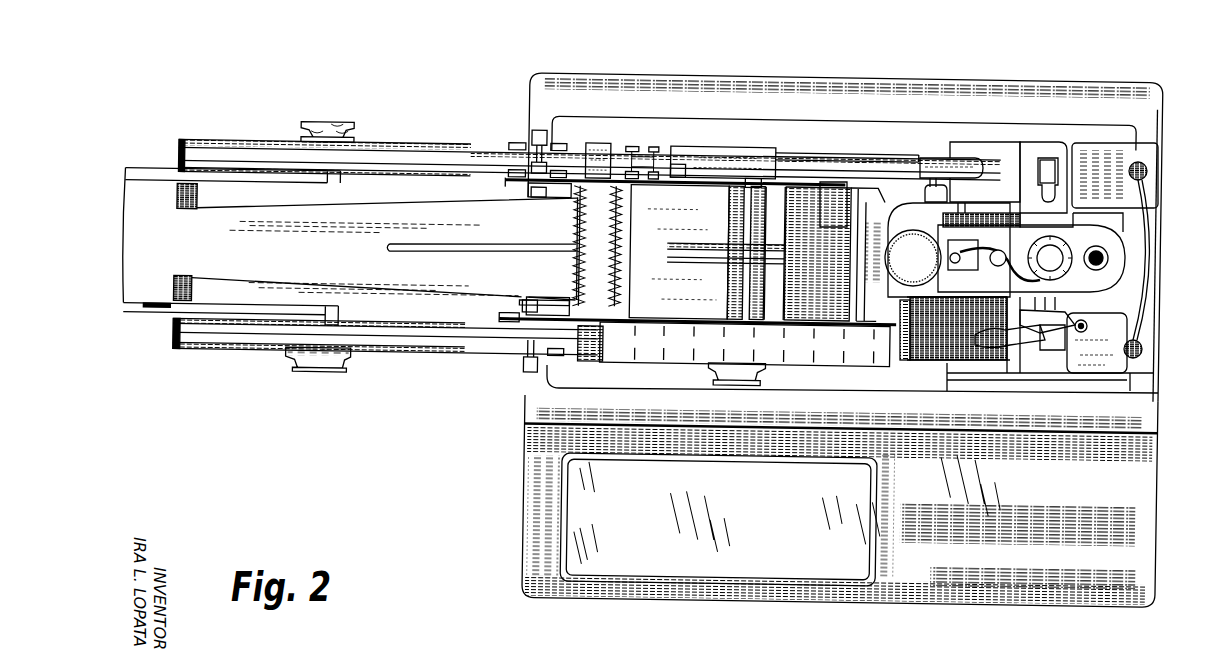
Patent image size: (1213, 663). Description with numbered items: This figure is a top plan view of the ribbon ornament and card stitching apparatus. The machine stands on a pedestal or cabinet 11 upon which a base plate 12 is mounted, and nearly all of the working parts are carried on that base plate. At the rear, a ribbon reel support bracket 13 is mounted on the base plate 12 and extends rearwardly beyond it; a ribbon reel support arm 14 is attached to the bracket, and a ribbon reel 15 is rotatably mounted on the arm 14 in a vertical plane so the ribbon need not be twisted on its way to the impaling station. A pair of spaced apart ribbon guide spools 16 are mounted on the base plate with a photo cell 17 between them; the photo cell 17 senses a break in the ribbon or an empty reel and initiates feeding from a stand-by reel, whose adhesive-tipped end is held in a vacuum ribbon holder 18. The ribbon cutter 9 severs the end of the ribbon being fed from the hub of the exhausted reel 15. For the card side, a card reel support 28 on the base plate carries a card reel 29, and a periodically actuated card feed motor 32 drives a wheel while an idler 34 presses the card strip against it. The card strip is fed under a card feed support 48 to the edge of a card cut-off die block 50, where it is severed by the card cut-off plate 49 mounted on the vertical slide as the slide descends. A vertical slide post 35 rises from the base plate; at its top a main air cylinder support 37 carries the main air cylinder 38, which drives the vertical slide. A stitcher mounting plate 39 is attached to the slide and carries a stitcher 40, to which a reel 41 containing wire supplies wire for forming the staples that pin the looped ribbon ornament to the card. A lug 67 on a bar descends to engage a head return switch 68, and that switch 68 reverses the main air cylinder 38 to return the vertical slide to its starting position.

The ribbon cutter 9 is at (600, 150).
The pedestal or cabinet 11 is at (523, 468).
The base plate 12 is at (953, 383).
The ribbon reel support bracket 13 is at (367, 210).
The ribbon reel support arm 14 is at (253, 173).
The ribbon reel 15 is at (293, 140).
The ribbon guide spools 16 is at (537, 372).
The photo cell 17 is at (537, 133).
The vacuum ribbon holder 18 is at (710, 150).
The card reel support 28 is at (717, 197).
The card reel 29 is at (818, 333).
The card feed motor 32 is at (912, 232).
The idler 34 is at (930, 165).
The vertical slide post 35 is at (1108, 258).
The main air cylinder support 37 is at (1067, 228).
The main air cylinder 38 is at (1063, 250).
The stitcher mounting plate 39 is at (1053, 210).
The stitcher 40 is at (1053, 340).
The reel 41 is at (980, 350).
The card feed support 48 is at (963, 148).
The card cut-off plate 49 is at (1050, 148).
The card cut-off die block 50 is at (1023, 143).
The lug 67 is at (1068, 313).
The head return switch 68 is at (1103, 323).